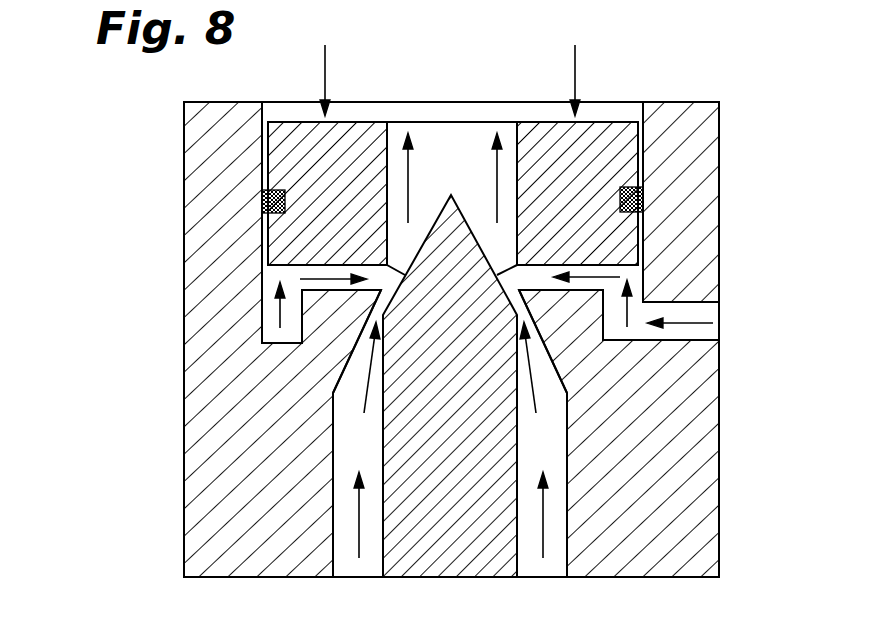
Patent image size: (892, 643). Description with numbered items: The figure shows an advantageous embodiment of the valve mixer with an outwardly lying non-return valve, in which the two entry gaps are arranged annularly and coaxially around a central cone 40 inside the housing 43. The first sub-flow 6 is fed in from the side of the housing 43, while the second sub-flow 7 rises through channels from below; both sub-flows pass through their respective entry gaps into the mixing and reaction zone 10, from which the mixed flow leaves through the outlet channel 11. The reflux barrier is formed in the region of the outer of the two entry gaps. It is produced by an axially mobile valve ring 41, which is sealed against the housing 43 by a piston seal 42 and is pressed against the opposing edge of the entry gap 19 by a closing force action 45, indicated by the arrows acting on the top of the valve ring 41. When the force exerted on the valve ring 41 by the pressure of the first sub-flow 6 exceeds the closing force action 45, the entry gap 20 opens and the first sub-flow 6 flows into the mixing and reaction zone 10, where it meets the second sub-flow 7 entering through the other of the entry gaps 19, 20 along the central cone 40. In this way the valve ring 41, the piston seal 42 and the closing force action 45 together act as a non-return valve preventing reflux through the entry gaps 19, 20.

The first sub-flow 6 is at (719, 323).
The second sub-flow 7 is at (450, 463).
The mixing and reaction zone 10 is at (386, 257).
The outlet channel 11 is at (452, 178).
The entry gap for the first sub-flow 19 is at (517, 286).
The entry gap for the second sub-flow 20 is at (384, 296).
The central cone 40 is at (450, 386).
The valve ring 41 is at (453, 193).
The piston seal 42 is at (268, 205).
The housing 43 is at (648, 468).
The closing force action on valve ring 45 is at (451, 65).